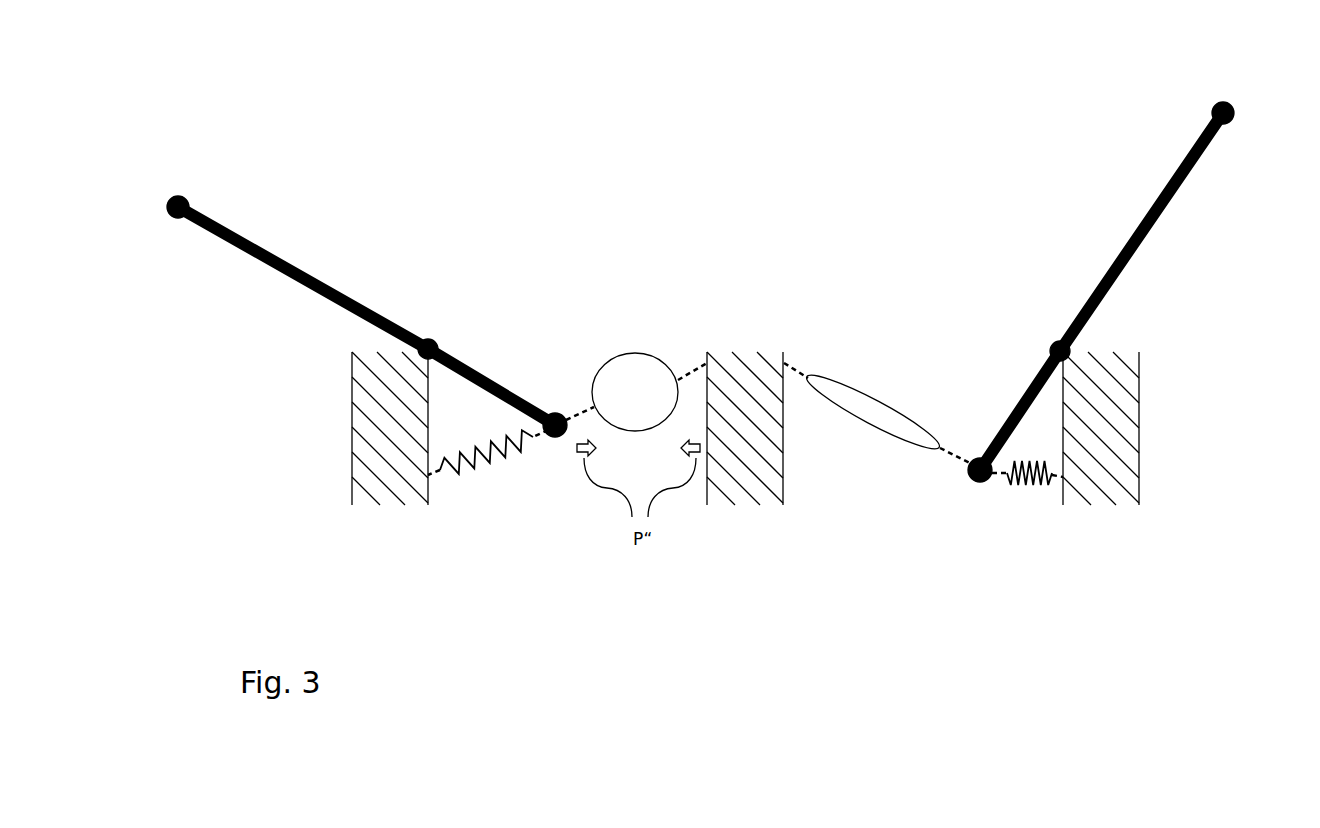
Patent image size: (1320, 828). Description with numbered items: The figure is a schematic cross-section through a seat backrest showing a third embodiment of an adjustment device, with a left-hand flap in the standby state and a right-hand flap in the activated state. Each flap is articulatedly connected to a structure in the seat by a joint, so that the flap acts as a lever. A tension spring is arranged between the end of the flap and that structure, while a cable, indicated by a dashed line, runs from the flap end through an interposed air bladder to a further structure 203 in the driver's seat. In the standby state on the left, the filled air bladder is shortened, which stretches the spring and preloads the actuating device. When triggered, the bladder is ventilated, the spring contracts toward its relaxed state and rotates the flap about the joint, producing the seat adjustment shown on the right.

The further structure 203 is at (741, 500).